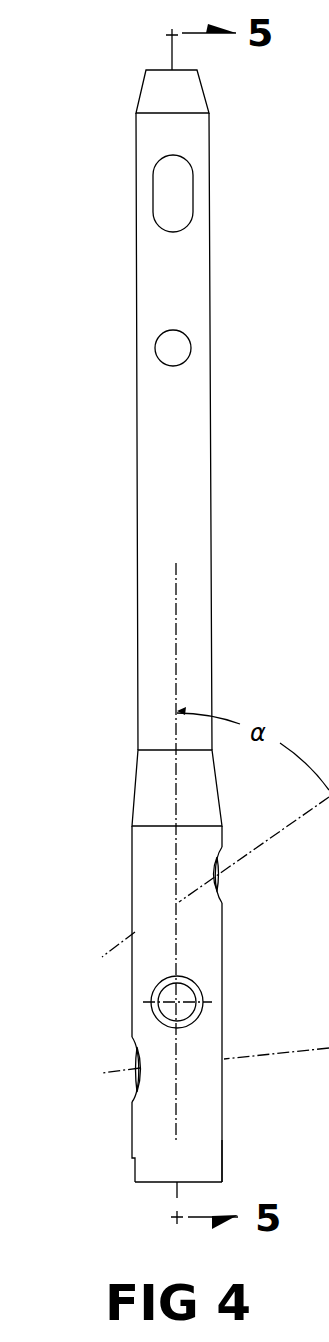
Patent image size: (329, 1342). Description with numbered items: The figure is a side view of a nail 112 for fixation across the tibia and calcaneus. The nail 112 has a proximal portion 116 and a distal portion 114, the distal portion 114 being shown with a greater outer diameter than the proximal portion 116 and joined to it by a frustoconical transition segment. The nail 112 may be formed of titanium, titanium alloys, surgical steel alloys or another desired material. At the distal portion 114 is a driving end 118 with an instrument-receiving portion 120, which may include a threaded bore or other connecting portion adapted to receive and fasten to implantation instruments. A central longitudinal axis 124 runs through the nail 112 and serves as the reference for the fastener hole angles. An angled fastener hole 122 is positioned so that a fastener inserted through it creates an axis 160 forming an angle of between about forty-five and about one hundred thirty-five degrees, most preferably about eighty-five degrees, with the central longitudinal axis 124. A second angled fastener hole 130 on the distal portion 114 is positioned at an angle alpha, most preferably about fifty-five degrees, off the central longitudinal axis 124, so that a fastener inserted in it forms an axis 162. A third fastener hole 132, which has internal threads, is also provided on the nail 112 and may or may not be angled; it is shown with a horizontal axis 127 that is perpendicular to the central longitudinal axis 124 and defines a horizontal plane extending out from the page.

The nail 112 is at (258, 125).
The proximal portion 116 is at (92, 73).
The distal portion 114 is at (96, 812).
The central longitudinal axis 124 is at (175, 643).
The axis 162 is at (243, 858).
The axis 160 is at (245, 1060).
The second angled fastener hole 130 is at (226, 888).
The angled fastener hole 122 is at (130, 1080).
The horizontal axis 127 is at (178, 1002).
The third fastener hole 132 is at (192, 1021).
The instrument-receiving portion 120 is at (227, 1166).
The driving end 118 is at (152, 1188).